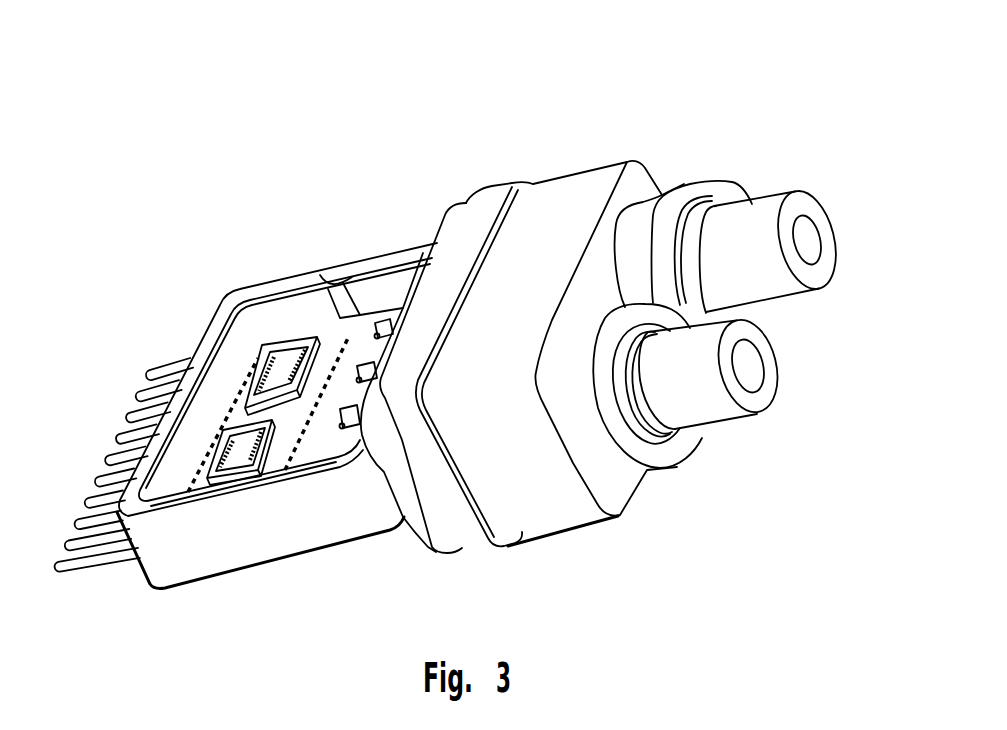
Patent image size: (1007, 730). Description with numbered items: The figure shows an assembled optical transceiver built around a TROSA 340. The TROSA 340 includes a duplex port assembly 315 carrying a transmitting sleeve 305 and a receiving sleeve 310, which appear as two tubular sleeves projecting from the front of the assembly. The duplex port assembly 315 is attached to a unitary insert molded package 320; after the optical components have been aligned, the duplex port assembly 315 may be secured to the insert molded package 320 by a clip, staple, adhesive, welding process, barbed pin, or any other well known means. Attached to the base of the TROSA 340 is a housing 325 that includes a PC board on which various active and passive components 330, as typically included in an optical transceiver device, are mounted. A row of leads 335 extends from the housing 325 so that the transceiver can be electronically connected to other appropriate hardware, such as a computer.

The transmitting sleeve 305 is at (735, 420).
The receiving sleeve 310 is at (808, 292).
The duplex port assembly 315 is at (592, 168).
The insert molded package 320 is at (465, 203).
The housing 325 is at (323, 272).
The active and passive components 330 is at (243, 450).
The leads 335 is at (170, 366).
The TROSA 340 is at (764, 74).